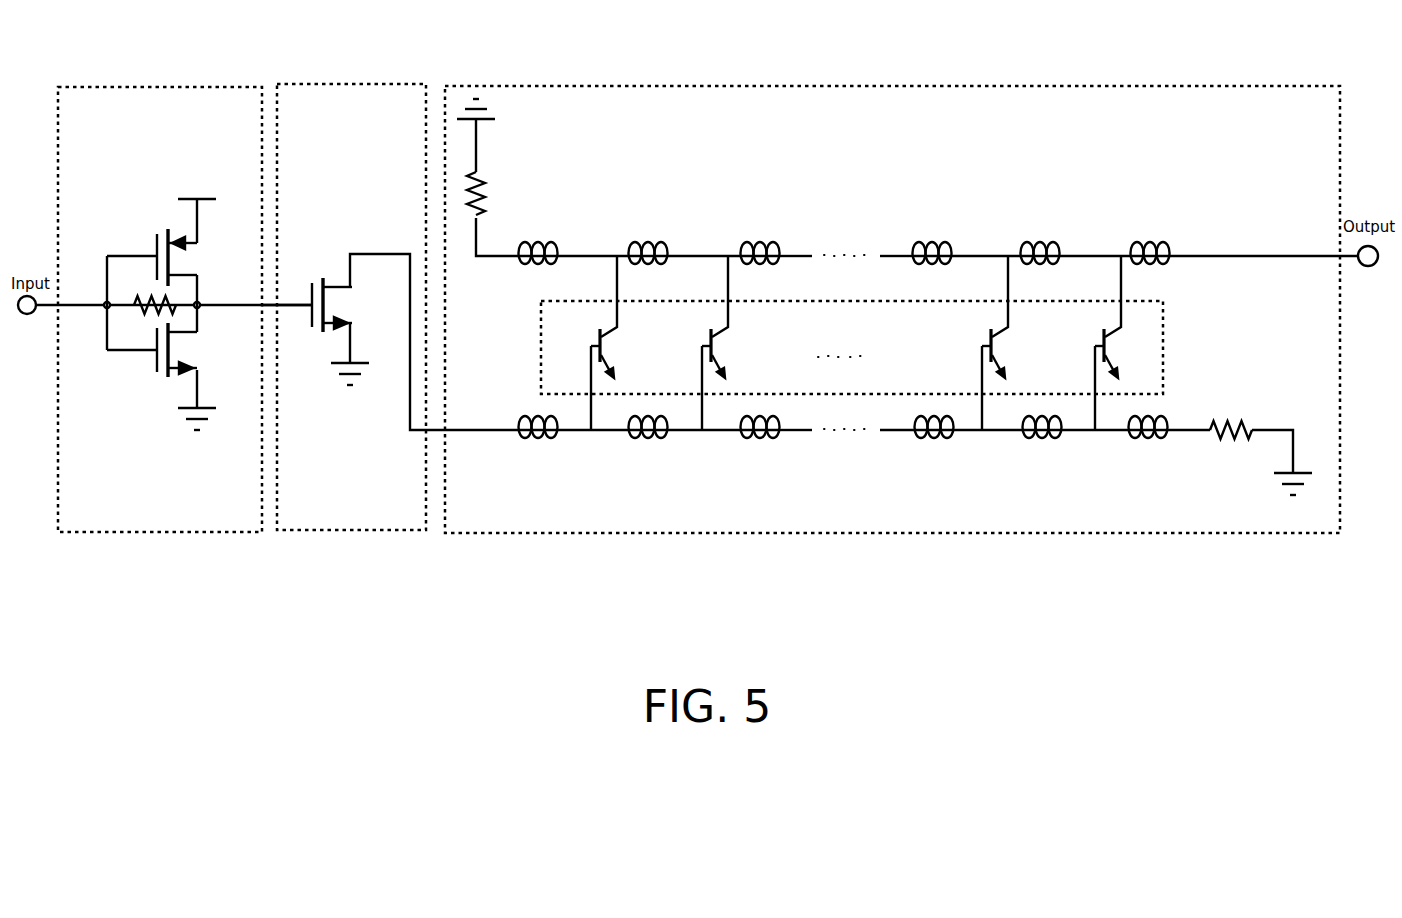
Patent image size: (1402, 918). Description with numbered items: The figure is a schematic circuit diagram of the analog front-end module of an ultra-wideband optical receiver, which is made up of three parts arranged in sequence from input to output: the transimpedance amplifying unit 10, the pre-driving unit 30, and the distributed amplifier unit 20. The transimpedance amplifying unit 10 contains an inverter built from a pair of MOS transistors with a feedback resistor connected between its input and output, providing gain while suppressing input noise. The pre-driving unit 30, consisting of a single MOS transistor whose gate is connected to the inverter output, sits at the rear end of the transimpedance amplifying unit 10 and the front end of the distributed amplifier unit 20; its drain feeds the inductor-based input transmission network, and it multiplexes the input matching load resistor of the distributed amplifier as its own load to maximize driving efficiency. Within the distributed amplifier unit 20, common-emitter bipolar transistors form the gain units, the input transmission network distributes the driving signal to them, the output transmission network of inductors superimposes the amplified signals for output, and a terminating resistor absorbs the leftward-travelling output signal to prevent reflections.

The transimpedance amplifying unit 10 is at (150, 92).
The pre-driving unit 30 is at (379, 92).
The distributed amplifier unit 20 is at (677, 100).